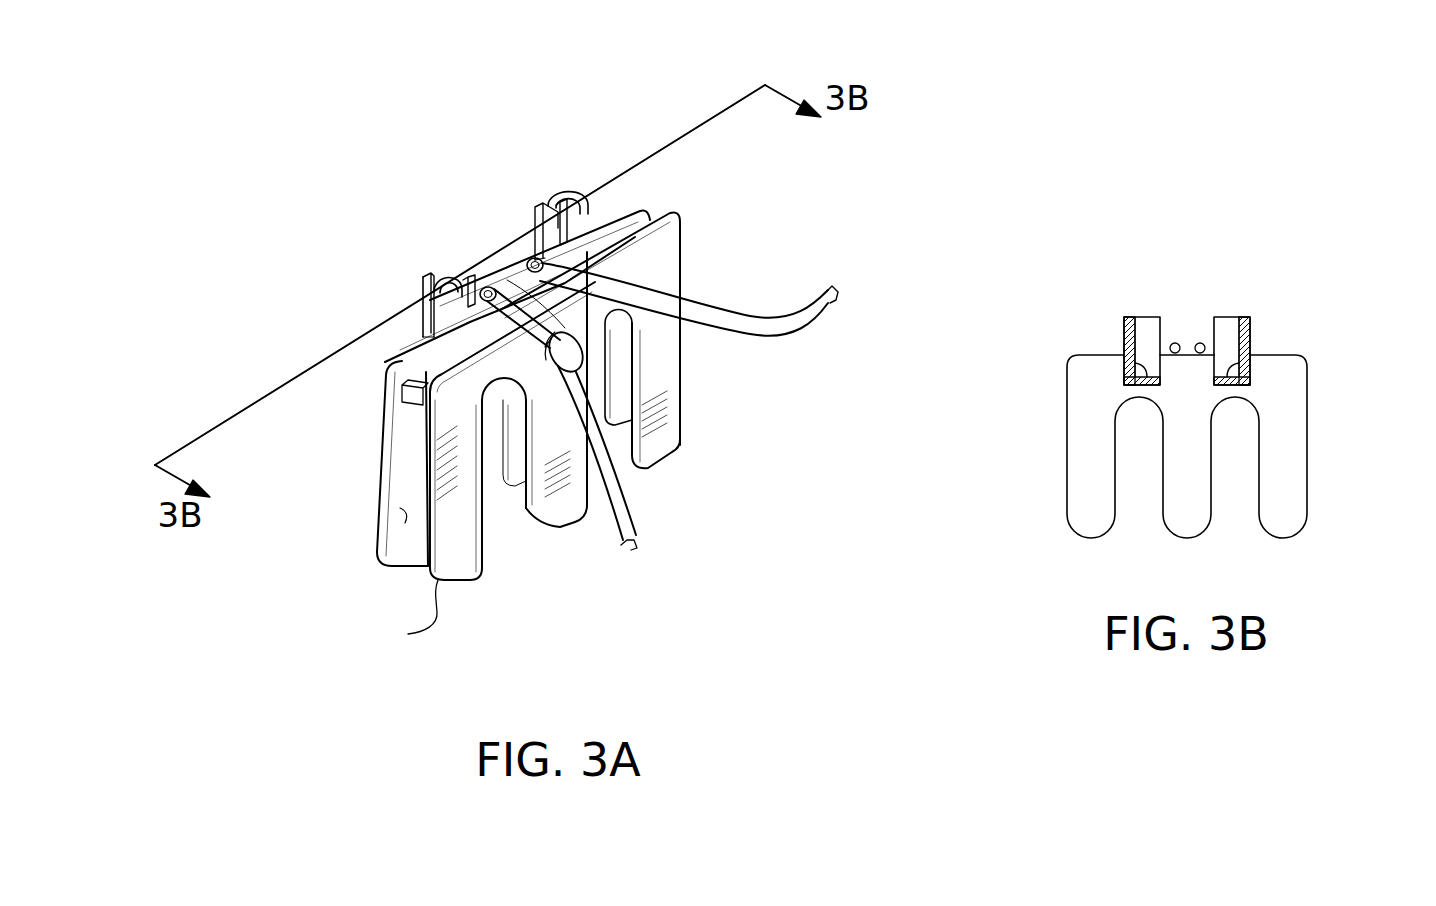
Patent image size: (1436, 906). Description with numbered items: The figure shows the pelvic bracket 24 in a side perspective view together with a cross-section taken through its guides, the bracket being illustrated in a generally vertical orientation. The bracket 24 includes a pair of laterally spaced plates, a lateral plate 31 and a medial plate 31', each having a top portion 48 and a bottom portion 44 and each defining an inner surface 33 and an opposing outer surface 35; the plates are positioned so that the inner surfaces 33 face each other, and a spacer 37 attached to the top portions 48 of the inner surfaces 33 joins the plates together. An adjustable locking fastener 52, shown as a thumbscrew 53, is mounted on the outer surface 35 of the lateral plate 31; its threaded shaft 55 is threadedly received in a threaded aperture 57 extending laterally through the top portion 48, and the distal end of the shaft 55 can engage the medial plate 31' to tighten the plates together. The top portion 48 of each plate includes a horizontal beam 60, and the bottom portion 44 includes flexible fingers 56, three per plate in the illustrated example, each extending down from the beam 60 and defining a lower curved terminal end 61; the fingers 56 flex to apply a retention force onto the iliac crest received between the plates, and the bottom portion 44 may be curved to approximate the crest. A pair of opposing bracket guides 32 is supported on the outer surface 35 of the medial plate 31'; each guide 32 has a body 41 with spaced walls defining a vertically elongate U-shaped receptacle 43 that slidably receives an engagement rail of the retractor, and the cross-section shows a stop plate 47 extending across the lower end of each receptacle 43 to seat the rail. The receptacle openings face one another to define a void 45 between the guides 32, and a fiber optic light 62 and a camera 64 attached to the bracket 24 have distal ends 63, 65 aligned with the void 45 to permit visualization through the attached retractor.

In FIG. 3A, the pelvic bracket 24 is at (705, 205).
In FIG. 3A, the lateral plate 31 is at (507, 594).
In FIG. 3A, the medial plate 31' is at (520, 454).
In FIG. 3B, the medial plate 31' is at (1199, 446).
In FIG. 3A, the bracket guide 32 is at (562, 205).
In FIG. 3B, the bracket guide 32 is at (1127, 318).
In FIG. 3A, the inner surface 33 is at (430, 505).
In FIG. 3A, the outer surface 35 is at (383, 390).
In FIG. 3B, the outer surface 35 is at (1290, 465).
In FIG. 3A, the spacer 37 is at (415, 400).
In FIG. 3A, the body 41 is at (425, 290).
In FIG. 3B, the body 41 is at (1123, 340).
In FIG. 3A, the receptacle 43 is at (438, 280).
In FIG. 3B, the receptacle 43 is at (1148, 327).
In FIG. 3A, the bottom portion 44 is at (670, 399).
In FIG. 3A, the void 45 is at (503, 213).
In FIG. 3B, the stop plate 47 is at (1123, 365).
In FIG. 3A, the top portion 48 is at (460, 382).
In FIG. 3A, the adjustable locking fastener 52 is at (583, 330).
In FIG. 3A, the thumbscrew 53 is at (522, 300).
In FIG. 3A, the threaded shaft 55 is at (483, 289).
In FIG. 3A, the flexible finger 56 is at (373, 573).
In FIG. 3B, the flexible finger 56 is at (1067, 487).
In FIG. 3A, the threaded aperture 57 is at (545, 373).
In FIG. 3A, the horizontal beam 60 is at (645, 258).
In FIG. 3A, the lower curved terminal end 61 is at (463, 580).
In FIG. 3A, the fiber optic light 62 is at (636, 540).
In FIG. 3B, the fiber optic light 62 is at (1200, 343).
In FIG. 3A, the distal end 63 is at (432, 278).
In FIG. 3A, the camera 64 is at (820, 292).
In FIG. 3B, the camera 64 is at (1175, 343).
In FIG. 3A, the distal end 65 is at (527, 258).